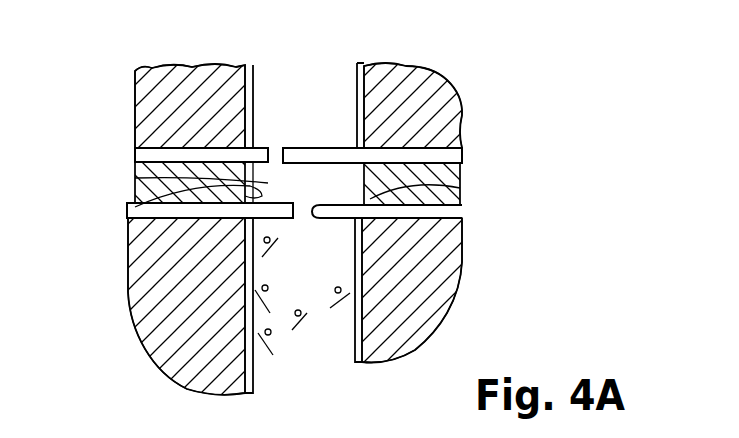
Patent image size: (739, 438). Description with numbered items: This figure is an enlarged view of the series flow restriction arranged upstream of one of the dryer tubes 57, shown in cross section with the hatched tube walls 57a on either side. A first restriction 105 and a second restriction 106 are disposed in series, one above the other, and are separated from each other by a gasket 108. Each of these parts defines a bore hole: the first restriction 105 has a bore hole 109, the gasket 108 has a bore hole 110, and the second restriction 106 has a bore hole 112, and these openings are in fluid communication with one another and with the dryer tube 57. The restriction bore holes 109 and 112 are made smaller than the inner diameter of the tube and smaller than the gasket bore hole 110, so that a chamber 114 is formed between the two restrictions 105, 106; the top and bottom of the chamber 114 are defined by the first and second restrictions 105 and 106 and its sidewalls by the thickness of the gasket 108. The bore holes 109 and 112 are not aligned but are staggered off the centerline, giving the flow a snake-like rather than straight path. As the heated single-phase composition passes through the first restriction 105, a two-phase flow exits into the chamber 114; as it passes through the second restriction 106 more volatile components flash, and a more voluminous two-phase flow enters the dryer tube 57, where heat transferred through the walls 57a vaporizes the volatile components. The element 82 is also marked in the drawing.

The dryer tube 57 is at (318, 375).
The tube wall 57a is at (355, 333).
The rim / flange 82 is at (330, 243).
The first restriction 105 is at (280, 148).
The second restriction 106 is at (135, 207).
The gasket 108 is at (460, 188).
The bore hole of the first restriction 109 is at (268, 146).
The gasket bore hole 110 is at (135, 178).
The bore hole of the second restriction 112 is at (298, 221).
The chamber 114 is at (333, 195).